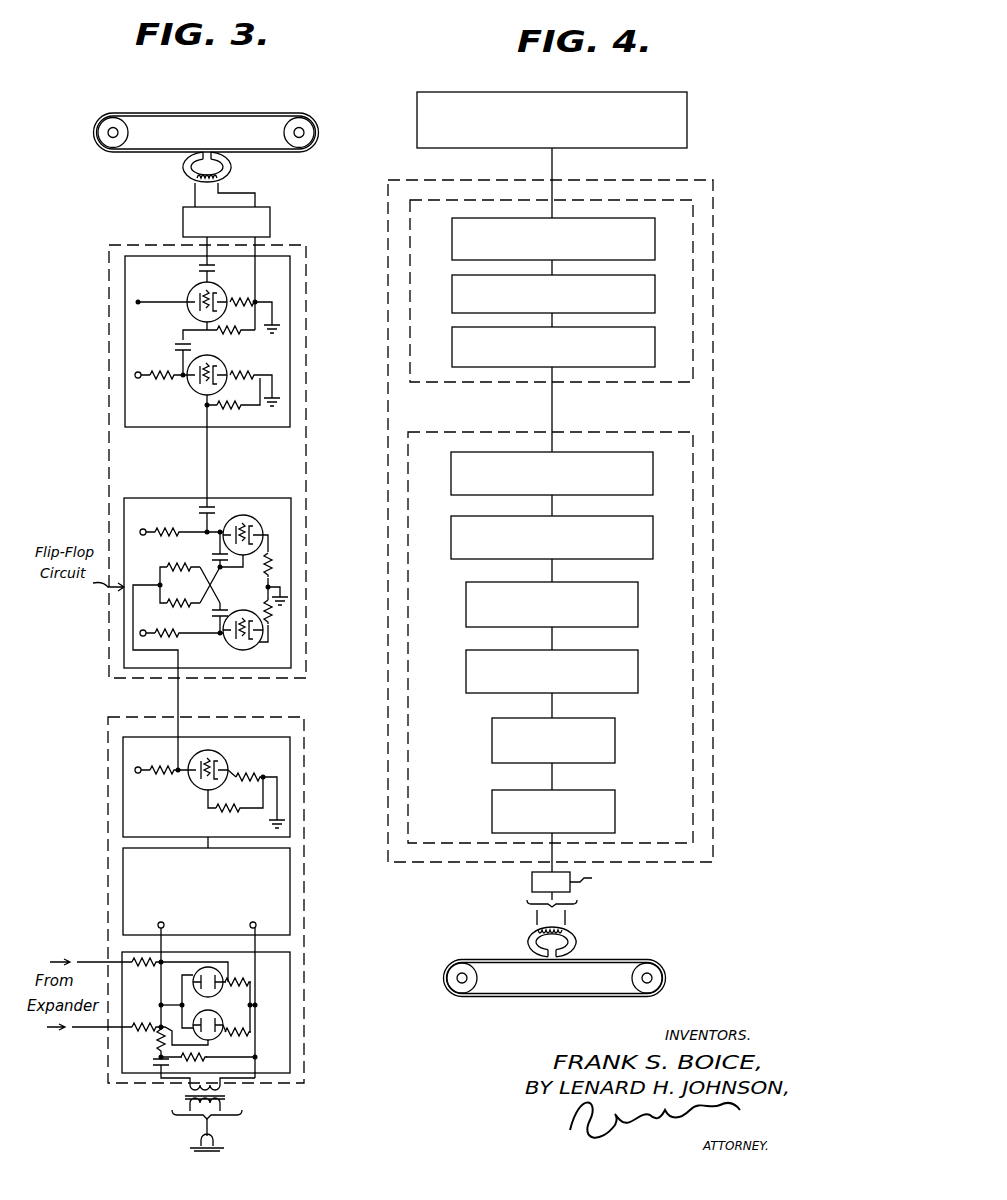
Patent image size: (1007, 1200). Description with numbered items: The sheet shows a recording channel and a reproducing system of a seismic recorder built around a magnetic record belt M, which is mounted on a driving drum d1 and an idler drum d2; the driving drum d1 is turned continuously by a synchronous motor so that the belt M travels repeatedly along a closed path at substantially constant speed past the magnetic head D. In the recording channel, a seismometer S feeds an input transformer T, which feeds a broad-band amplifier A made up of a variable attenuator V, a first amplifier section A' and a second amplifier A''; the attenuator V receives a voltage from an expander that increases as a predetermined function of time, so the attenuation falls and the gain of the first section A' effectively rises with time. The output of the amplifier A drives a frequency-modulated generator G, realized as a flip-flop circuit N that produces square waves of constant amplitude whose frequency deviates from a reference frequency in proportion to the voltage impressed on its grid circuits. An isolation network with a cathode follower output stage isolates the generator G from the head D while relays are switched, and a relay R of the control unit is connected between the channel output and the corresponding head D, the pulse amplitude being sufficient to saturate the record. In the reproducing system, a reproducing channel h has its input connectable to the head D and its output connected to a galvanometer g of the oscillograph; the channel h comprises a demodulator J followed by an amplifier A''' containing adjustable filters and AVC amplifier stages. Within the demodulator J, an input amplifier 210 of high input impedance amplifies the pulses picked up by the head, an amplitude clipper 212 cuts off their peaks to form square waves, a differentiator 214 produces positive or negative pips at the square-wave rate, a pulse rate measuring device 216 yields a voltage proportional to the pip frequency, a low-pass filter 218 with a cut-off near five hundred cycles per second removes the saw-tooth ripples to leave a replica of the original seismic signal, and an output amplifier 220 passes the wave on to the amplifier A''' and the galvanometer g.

In FIG. 3, the record belt M is at (278, 114).
In FIG. 4, the record belt M is at (531, 998).
In FIG. 3, the driving drum d1 is at (101, 132).
In FIG. 4, the driving drum d1 is at (446, 982).
In FIG. 3, the idler drum d2 is at (314, 133).
In FIG. 4, the idler drum d2 is at (660, 984).
In FIG. 3, the magnetic head D is at (231, 170).
In FIG. 4, the magnetic head D is at (527, 941).
In FIG. 3, the relay R is at (270, 222).
In FIG. 4, the relay R is at (532, 882).
In FIG. 3, the frequency-modulated generator G is at (306, 298).
In FIG. 3, the amplifier A''' is at (207, 359).
In FIG. 4, the amplifier A''' is at (551, 307).
In FIG. 3, the flip-flop circuit N is at (298, 562).
In FIG. 3, the amplifier A is at (220, 900).
In FIG. 3, the second amplifier A'' is at (236, 787).
In FIG. 3, the first amplifier section A' is at (226, 891).
In FIG. 3, the variable attenuator V is at (297, 987).
In FIG. 3, the input transformer T is at (228, 1097).
In FIG. 3, the seismometer S is at (215, 1142).
In FIG. 4, the galvanometer g is at (666, 98).
In FIG. 4, the reproducing channel h is at (388, 357).
In FIG. 4, the demodulator J is at (537, 422).
In FIG. 4, the output amplifier 220 is at (654, 465).
In FIG. 4, the low-pass filter 218 is at (654, 528).
In FIG. 4, the pulse rate measuring device 216 is at (640, 613).
In FIG. 4, the differentiator 214 is at (640, 676).
In FIG. 4, the amplitude clipper 212 is at (615, 747).
In FIG. 4, the input amplifier 210 is at (615, 817).